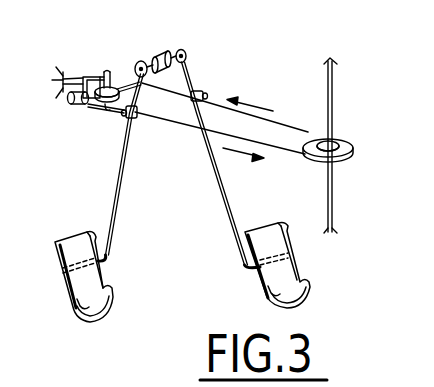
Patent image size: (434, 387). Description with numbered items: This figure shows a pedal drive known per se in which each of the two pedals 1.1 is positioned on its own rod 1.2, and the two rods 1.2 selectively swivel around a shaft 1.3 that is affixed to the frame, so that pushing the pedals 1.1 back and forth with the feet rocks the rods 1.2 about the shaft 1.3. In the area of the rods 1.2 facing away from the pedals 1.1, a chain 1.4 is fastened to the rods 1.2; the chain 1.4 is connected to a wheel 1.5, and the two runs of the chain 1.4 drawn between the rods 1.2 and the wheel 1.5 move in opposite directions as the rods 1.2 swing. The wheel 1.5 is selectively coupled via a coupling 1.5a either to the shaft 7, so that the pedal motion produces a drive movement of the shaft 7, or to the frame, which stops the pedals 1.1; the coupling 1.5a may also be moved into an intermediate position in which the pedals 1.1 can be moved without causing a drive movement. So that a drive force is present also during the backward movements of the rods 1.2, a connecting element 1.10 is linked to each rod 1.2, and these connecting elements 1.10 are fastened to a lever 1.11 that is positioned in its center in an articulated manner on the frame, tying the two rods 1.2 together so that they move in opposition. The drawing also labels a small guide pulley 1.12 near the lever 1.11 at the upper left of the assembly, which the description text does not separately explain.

The pedals 1.1 is at (75, 278).
The rod 1.2 is at (121, 168).
The shaft 1.3 is at (148, 62).
The chain 1.4 is at (288, 123).
The wheel 1.5 is at (343, 141).
The coupling 1.5a is at (338, 158).
The connecting element 1.10 is at (121, 119).
The lever 1.11 is at (85, 106).
The guide pulley 1.12 is at (106, 71).
The shaft 7 is at (334, 94).